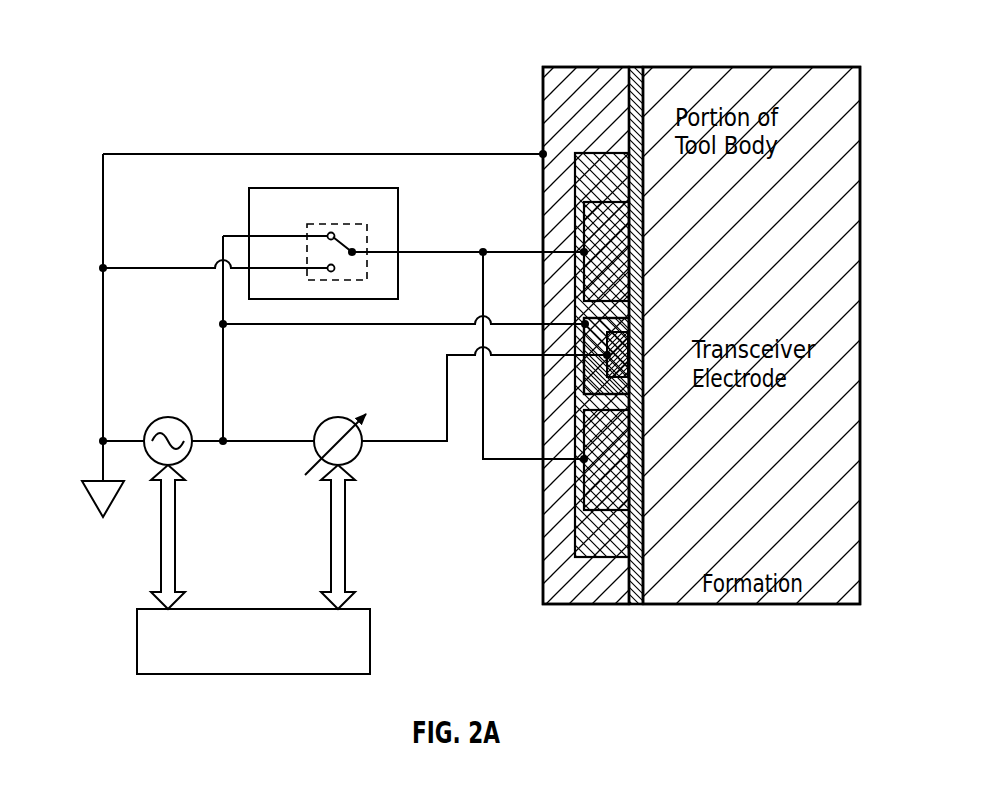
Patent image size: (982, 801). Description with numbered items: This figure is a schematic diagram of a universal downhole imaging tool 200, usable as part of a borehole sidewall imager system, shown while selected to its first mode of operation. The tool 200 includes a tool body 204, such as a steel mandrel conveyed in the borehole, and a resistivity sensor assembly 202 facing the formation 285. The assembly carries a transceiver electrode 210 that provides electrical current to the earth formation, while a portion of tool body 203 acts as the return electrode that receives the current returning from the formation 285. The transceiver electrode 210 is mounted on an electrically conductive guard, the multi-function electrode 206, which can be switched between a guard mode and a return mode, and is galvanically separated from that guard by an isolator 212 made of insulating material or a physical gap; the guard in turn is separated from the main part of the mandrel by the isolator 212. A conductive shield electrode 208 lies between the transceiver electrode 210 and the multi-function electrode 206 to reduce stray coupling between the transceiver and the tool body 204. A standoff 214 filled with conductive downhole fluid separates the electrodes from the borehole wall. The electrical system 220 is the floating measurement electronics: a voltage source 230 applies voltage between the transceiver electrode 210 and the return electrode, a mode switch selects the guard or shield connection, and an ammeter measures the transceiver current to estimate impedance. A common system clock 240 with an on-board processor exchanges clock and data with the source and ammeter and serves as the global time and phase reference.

The universal downhole imaging tool 200 is at (610, 30).
The resistivity sensor assembly 202 is at (779, 238).
The portion of tool body 203 is at (605, 127).
The tool body 204 is at (633, 80).
The multi-function electrode 206 is at (603, 267).
The shield electrode 208 is at (632, 316).
The transceiver electrode 210 is at (633, 353).
The isolator 212 is at (610, 537).
The standoff 214 is at (636, 470).
The electrical system 220 is at (420, 69).
The voltage source 230 is at (168, 417).
The system clock 240 is at (370, 640).
The formation 285 is at (815, 72).